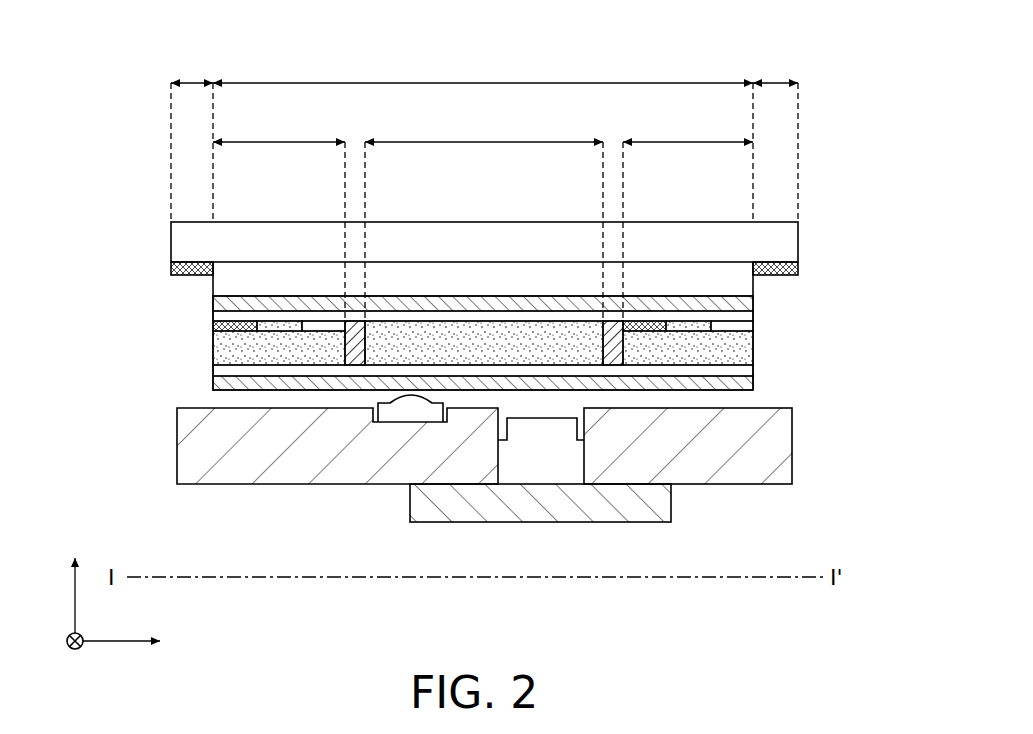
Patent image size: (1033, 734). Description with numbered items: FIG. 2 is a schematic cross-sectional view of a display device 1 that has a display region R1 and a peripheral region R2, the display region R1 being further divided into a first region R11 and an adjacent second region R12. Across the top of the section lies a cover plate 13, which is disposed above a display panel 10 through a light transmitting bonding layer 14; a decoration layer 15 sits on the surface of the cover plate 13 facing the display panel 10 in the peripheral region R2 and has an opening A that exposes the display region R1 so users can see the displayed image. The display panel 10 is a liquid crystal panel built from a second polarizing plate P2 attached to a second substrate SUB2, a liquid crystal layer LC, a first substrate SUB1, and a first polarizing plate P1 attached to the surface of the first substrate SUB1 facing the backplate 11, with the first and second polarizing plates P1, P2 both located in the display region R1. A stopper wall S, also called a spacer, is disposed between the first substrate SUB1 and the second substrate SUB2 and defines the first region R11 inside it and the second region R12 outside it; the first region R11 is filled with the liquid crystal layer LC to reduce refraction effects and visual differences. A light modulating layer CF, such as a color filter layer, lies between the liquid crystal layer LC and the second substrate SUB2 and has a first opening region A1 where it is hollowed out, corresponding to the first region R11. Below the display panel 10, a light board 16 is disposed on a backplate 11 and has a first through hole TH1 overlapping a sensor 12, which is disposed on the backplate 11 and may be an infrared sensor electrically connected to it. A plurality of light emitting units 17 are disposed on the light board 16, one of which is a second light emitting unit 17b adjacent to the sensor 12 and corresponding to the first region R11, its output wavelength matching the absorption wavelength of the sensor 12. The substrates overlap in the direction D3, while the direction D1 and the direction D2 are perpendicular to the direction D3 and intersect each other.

The display device 1 is at (840, 123).
The display panel 10 is at (210, 297).
The backplate 11 is at (642, 497).
The sensor 12 is at (553, 466).
The cover plate 13 is at (184, 238).
The bonding layer 14 is at (230, 284).
The decoration layer 15 is at (172, 271).
The light board 16 is at (767, 458).
The light emitting unit 17 is at (410, 409).
The second light emitting unit 17b is at (402, 412).
The first through hole TH1 is at (580, 468).
The first polarizing plate P1 is at (737, 383).
The second polarizing plate P2 is at (742, 305).
The first substrate SUB1 is at (737, 372).
The second substrate SUB2 is at (737, 317).
The light modulating layer CF is at (757, 327).
The liquid crystal layer LC is at (737, 355).
The stopper wall S is at (600, 343).
The opening A is at (750, 272).
The first opening region A1 is at (349, 327).
The display region R1 is at (483, 136).
The peripheral region R2 is at (484, 136).
The first region R11 is at (484, 215).
The second region R12 is at (483, 215).
The direction D1 is at (141, 641).
The direction D2 is at (56, 658).
The direction D3 is at (74, 580).